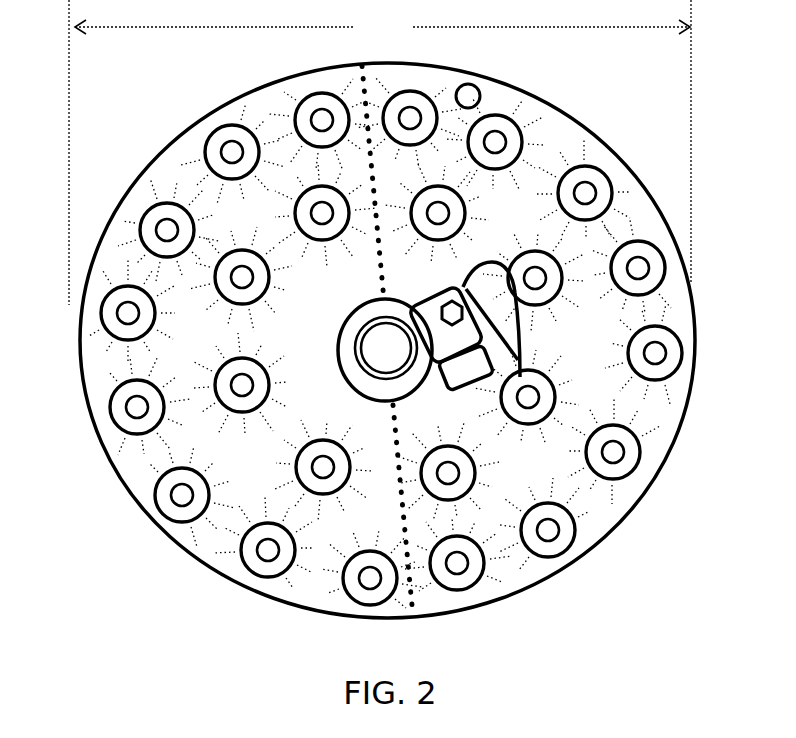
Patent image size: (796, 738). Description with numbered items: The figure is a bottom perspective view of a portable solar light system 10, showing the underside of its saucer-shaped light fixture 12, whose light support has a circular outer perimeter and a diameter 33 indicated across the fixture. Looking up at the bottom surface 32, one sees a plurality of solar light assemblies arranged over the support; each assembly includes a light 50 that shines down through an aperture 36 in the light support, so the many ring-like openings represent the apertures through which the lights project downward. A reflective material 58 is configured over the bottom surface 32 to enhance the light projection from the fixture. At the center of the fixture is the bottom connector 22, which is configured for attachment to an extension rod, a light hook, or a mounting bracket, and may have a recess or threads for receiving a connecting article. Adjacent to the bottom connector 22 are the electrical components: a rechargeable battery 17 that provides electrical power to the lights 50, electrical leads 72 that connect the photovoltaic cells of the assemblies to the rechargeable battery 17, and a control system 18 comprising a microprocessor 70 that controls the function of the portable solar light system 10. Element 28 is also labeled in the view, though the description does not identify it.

The portable solar light system 10 is at (175, 140).
The light fixture 12 is at (552, 170).
The rechargeable battery 17 is at (430, 323).
The control system 18 is at (393, 403).
The bottom connector 22 is at (340, 336).
The drain hole 28 is at (474, 87).
The bottom surface 32 is at (650, 428).
The diameter 33 is at (380, 152).
The aperture 36 is at (640, 455).
The light 50 is at (583, 537).
The reflective material 58 is at (640, 212).
The microprocessor 70 is at (428, 294).
The electrical leads 72 is at (520, 347).